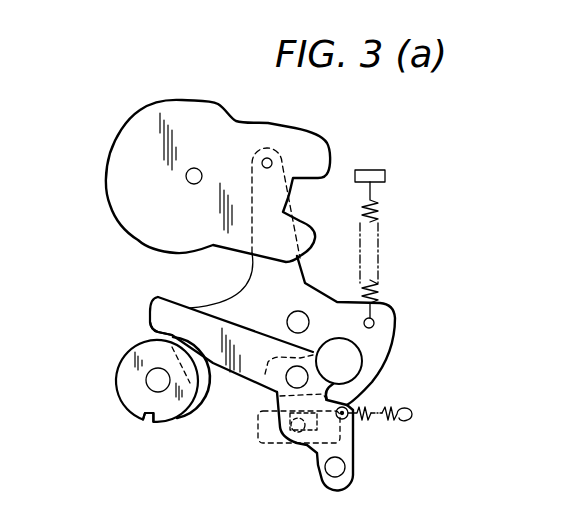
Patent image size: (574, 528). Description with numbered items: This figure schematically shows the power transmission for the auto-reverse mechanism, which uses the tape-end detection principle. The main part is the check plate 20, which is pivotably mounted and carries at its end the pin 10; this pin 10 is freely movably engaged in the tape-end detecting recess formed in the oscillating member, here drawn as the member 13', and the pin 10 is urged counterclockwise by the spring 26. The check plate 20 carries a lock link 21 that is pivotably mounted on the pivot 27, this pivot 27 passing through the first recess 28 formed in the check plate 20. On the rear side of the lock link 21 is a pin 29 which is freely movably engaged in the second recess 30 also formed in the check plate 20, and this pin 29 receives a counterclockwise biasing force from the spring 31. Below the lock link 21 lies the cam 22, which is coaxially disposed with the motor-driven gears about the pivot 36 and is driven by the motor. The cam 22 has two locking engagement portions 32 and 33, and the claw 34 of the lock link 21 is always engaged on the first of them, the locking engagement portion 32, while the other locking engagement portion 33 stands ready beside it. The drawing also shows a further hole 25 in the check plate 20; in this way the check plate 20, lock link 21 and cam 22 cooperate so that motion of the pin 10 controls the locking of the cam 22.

The pin 10 is at (268, 157).
The member 13' is at (246, 181).
The check plate 20 is at (387, 357).
The lock link 21 is at (153, 316).
The cam 22 is at (120, 377).
The hole 25 is at (305, 317).
The spring 26 is at (375, 242).
The pivot 27 is at (290, 374).
The first recess 28 is at (347, 352).
The pin 29 is at (296, 433).
The second recess 30 is at (265, 428).
The spring 31 is at (378, 422).
The locking engagement portion 32 is at (148, 424).
The locking engagement portion 33 is at (183, 418).
The claw 34 is at (155, 327).
The pivot 36 is at (152, 381).